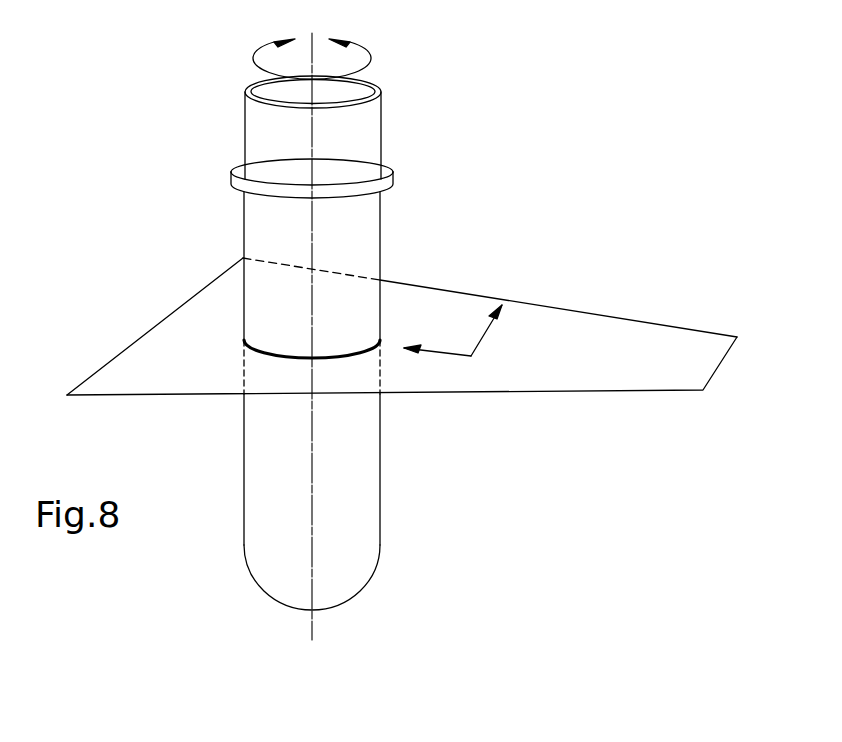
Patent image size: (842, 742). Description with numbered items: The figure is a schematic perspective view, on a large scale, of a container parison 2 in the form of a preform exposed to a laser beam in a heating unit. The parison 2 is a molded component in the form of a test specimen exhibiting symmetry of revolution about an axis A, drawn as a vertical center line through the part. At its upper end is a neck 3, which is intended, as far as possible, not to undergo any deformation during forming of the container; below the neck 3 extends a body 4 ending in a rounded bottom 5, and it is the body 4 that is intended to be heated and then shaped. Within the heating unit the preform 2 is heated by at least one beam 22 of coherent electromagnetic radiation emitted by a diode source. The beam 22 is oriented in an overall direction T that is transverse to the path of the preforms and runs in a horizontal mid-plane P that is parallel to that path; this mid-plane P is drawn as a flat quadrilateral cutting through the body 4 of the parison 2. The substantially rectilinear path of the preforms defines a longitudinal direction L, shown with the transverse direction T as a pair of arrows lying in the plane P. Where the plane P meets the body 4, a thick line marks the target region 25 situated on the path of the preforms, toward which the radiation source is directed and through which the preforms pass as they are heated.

The parison 2 is at (381, 228).
The neck 3 is at (372, 125).
The body 4 is at (372, 470).
The bottom 5 is at (336, 608).
The beam 22 is at (520, 298).
The target region 25 is at (240, 312).
The axis A is at (312, 473).
The horizontal mid-plane P is at (402, 323).
The transverse direction T is at (447, 349).
The longitudinal direction L is at (480, 350).